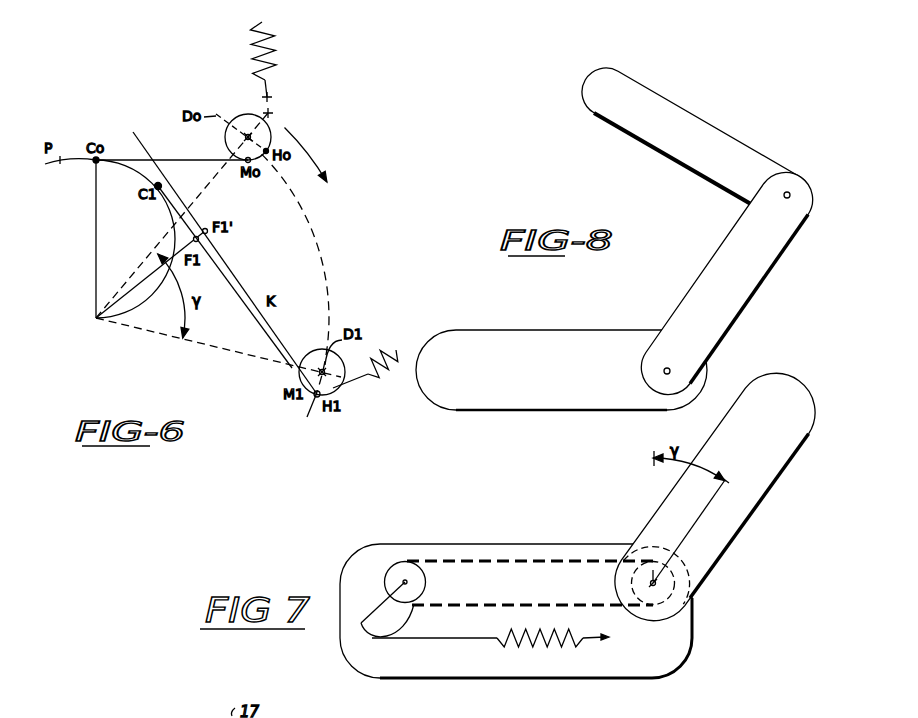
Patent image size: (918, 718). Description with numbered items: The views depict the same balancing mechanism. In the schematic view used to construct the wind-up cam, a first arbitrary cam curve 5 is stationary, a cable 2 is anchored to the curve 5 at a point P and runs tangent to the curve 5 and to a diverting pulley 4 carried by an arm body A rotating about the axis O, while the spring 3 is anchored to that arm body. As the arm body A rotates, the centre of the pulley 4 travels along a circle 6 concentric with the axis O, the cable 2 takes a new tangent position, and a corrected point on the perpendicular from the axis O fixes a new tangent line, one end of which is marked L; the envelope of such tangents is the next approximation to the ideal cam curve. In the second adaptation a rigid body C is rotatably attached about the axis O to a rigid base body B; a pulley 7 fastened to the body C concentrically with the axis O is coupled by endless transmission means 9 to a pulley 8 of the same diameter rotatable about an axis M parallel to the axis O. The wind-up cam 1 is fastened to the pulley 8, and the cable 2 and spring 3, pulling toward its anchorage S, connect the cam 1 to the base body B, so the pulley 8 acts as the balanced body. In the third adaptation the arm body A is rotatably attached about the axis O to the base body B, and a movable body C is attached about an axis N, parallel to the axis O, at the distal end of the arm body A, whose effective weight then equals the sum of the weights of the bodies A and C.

In FIG. 7, the wind-up cam 1 is at (380, 638).
In FIG. 6, the cable 2 is at (178, 160).
In FIG. 7, the cable 2 is at (452, 638).
In FIG. 6, the spring 3 is at (275, 63).
In FIG. 7, the spring 3 is at (548, 641).
In FIG. 6, the diverting pulley 4 is at (245, 133).
In FIG. 6, the first approximation cam curve 5 is at (137, 305).
In FIG. 6, the circle 6 is at (327, 265).
In FIG. 7, the pulley 7 is at (633, 584).
In FIG. 7, the pulley 8 is at (424, 593).
In FIG. 7, the belt 9 is at (497, 563).
In FIG. 8, the arm body A is at (742, 285).
In FIG. 7, the arm body A is at (385, 583).
In FIG. 8, the base body B is at (566, 364).
In FIG. 7, the base body B is at (675, 648).
In FIG. 6, the rigid body C is at (312, 166).
In FIG. 8, the rigid body C is at (711, 153).
In FIG. 7, the rigid body C is at (749, 472).
In FIG. 8, the axis N is at (780, 204).
In FIG. 6, the axis of rotation O is at (208, 245).
In FIG. 7, the axis of rotation O is at (659, 583).
In FIG. 7, the axis M is at (405, 582).
In FIG. 7, the anchor point P is at (362, 625).
In FIG. 6, the spring force S is at (256, 20).
In FIG. 7, the spring force S is at (602, 642).
In FIG. 6, the end point of tangent line L is at (225, 259).